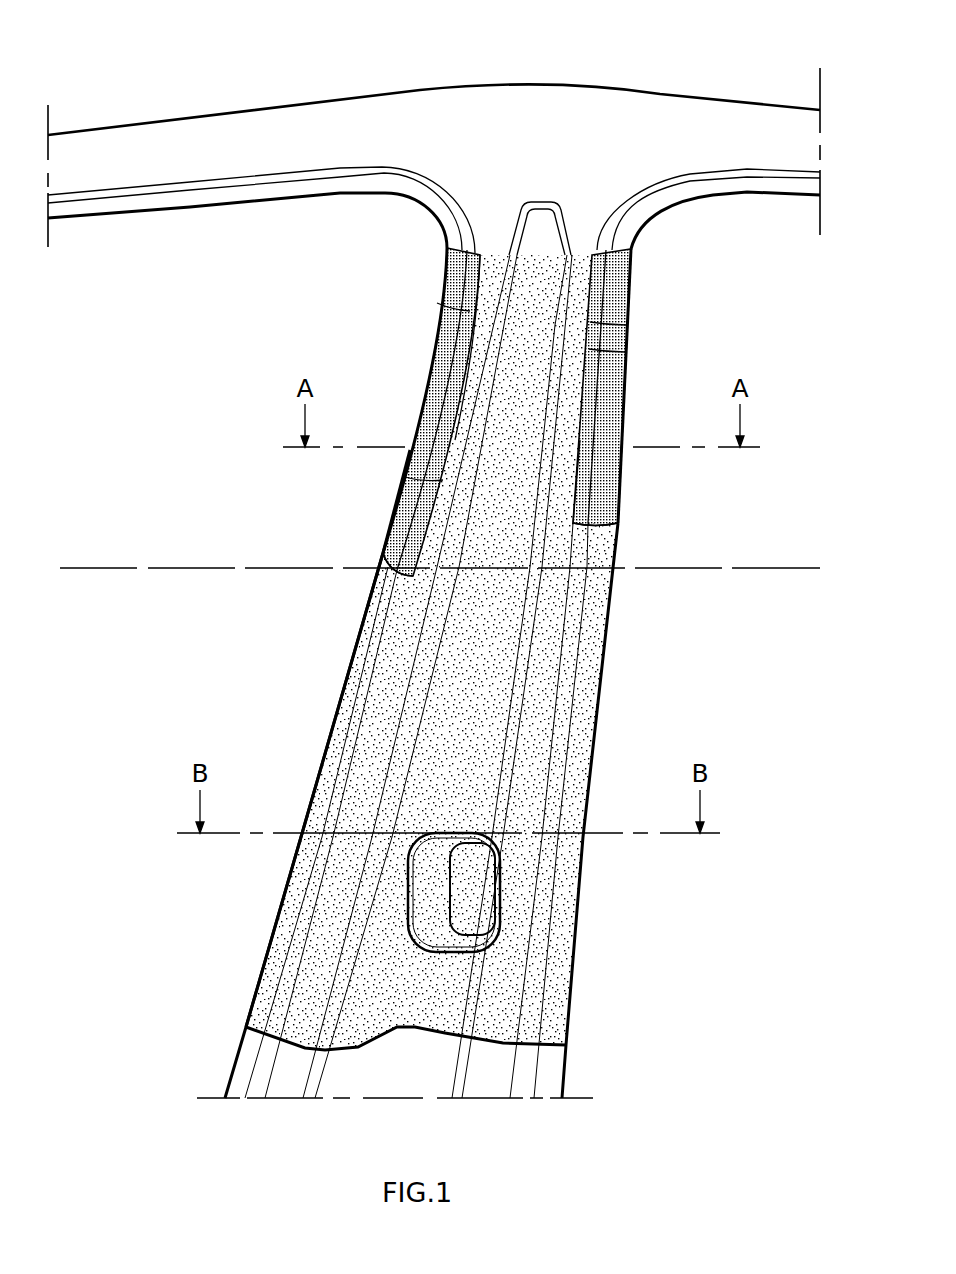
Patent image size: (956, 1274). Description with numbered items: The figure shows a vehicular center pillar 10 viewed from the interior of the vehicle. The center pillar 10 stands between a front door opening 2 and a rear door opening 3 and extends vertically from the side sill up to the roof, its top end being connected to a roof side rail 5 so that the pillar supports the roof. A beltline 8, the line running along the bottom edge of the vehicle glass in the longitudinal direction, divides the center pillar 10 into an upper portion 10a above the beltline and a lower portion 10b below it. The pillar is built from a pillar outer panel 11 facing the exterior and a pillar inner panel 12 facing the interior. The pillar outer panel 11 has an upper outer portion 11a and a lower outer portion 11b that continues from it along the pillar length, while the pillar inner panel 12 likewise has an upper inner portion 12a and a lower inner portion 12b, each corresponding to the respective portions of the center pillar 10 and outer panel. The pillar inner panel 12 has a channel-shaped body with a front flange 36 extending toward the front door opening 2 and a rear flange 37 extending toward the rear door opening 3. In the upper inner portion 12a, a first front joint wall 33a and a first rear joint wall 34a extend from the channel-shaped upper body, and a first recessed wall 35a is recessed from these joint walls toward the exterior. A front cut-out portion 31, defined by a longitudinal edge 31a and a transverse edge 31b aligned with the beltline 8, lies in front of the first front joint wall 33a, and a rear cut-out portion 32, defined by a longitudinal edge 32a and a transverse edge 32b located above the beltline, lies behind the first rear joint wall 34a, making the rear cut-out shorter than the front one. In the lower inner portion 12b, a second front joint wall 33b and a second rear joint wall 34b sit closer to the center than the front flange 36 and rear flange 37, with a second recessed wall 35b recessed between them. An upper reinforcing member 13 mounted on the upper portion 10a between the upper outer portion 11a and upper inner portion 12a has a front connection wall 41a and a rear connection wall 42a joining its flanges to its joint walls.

The roof side rail 5 is at (546, 70).
The front door opening 2 is at (143, 379).
The rear door opening 3 is at (803, 369).
The beltline 8 is at (123, 572).
The vehicular center pillar 10 is at (266, 466).
The upper portion 10a is at (402, 330).
The lower portion 10b is at (296, 716).
The pillar outer panel 11 is at (381, 512).
The upper outer portion 11a is at (436, 275).
The lower outer portion 11b is at (341, 663).
The pillar inner panel 12 is at (641, 605).
The upper inner portion 12a is at (603, 292).
The lower inner portion 12b is at (619, 646).
The upper reinforcing member 13 is at (636, 420).
The front cut-out portion 31 is at (435, 393).
The longitudinal edge 31a is at (440, 480).
The transverse edge 31b is at (388, 557).
The rear cut-out portion 32 is at (610, 385).
The longitudinal edge 32a is at (588, 350).
The transverse edge 32b is at (600, 522).
The first front joint wall 33a is at (487, 313).
The second front joint wall 33b is at (375, 777).
The first rear joint wall 34a is at (585, 325).
The second rear joint wall 34b is at (523, 795).
The first recessed wall 35a is at (537, 268).
The second recessed wall 35b is at (480, 737).
The front flange 36 is at (375, 618).
The rear flange 37 is at (587, 693).
The front connection wall 41a is at (440, 363).
The rear connection wall 42a is at (608, 466).